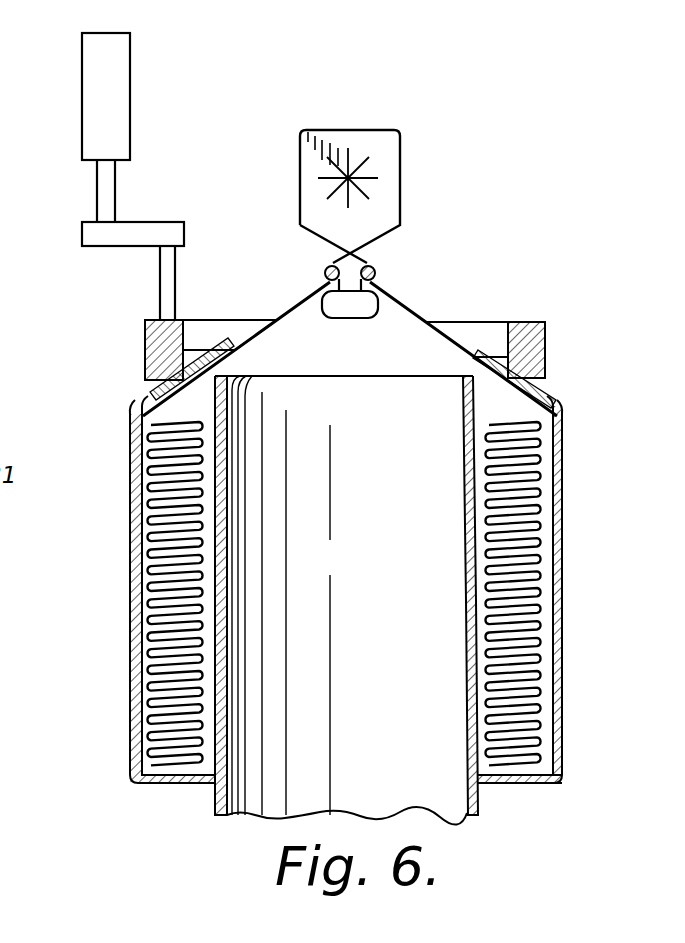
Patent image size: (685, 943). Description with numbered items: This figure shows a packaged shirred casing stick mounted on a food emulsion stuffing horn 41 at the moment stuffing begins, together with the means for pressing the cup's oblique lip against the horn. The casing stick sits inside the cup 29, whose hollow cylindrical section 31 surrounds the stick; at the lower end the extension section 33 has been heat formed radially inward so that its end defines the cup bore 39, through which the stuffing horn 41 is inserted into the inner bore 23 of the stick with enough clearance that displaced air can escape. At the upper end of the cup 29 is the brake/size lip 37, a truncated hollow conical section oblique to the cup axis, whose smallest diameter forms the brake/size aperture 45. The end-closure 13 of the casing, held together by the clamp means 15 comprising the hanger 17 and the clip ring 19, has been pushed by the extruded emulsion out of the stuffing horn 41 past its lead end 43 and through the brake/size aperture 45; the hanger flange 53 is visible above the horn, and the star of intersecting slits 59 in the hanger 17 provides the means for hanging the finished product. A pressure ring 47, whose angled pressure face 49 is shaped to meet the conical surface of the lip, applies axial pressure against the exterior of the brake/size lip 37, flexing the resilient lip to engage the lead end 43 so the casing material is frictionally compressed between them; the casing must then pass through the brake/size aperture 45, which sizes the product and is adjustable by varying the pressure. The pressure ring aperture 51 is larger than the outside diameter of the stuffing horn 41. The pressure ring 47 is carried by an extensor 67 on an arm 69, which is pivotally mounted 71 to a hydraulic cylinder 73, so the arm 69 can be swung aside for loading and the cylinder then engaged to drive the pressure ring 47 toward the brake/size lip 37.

The end-closure 13 is at (442, 330).
The clamp means 15 is at (354, 227).
The hanger 17 is at (305, 142).
The clip ring 19 is at (326, 270).
The inner bore 23 is at (470, 592).
The cup 29 is at (392, 609).
The hollow cylindrical section 31 is at (563, 455).
The extension section 33 is at (515, 785).
The brake/size lip 37 is at (492, 352).
The cup bore 39 is at (470, 778).
The food emulsion stuffing horn 41 is at (562, 398).
The lead end 43 is at (313, 376).
The brake/size aperture 45 is at (228, 350).
The pressure ring 47 is at (546, 338).
The pressure face 49 is at (467, 388).
The pressure ring aperture 51 is at (193, 323).
The hanger flange 53 is at (362, 322).
The slits 59 is at (365, 165).
The extensor 67 is at (160, 280).
The arm 69 is at (140, 232).
The pivotal mounting 71 is at (97, 208).
The hydraulic cylinder 73 is at (95, 88).